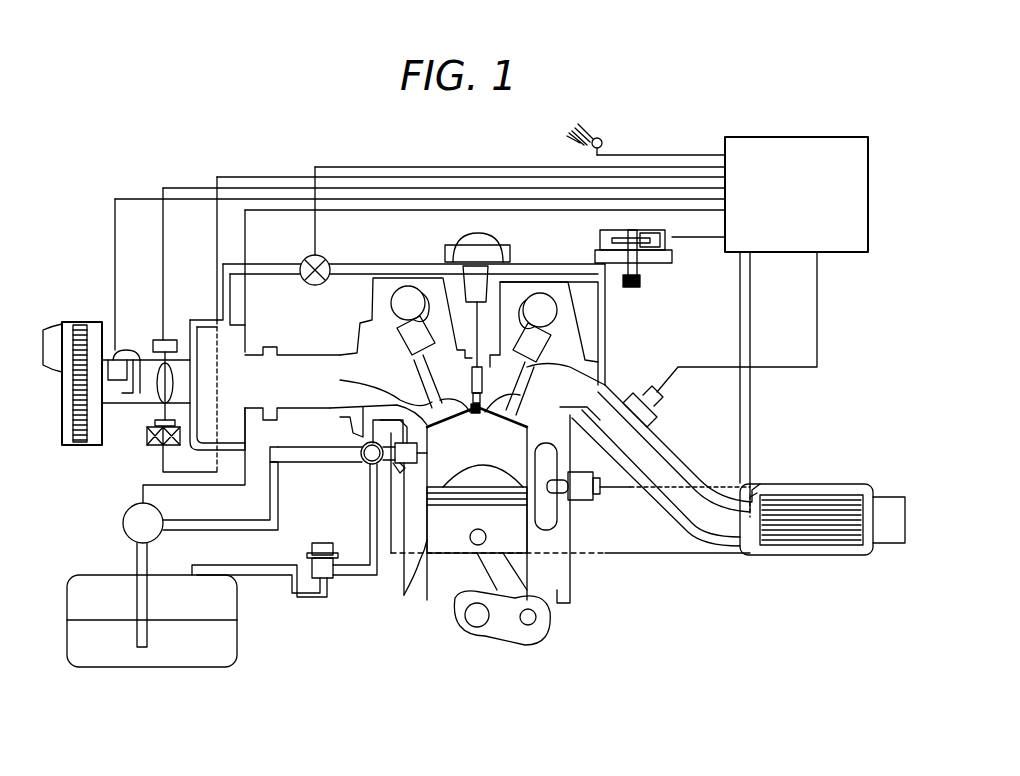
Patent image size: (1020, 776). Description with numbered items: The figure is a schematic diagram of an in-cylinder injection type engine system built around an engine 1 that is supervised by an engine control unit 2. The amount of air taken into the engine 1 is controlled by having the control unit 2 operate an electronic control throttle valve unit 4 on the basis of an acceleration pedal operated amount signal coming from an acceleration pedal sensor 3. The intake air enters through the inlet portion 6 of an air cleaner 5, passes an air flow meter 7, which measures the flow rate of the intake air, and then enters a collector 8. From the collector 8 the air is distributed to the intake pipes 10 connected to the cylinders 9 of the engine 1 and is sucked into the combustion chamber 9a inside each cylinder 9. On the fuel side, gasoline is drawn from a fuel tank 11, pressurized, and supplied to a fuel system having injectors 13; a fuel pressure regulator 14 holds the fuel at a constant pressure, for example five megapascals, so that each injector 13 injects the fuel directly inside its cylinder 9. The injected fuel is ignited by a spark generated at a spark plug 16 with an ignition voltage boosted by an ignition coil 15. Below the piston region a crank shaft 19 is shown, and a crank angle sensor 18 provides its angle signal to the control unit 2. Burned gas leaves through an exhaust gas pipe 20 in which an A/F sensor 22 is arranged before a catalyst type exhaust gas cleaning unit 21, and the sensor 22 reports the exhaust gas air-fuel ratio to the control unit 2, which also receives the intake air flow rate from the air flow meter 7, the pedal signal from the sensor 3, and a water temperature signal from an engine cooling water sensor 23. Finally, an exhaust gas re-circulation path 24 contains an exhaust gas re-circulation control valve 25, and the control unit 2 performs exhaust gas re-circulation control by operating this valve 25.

The engine 1 is at (427, 588).
The engine control unit 2 is at (790, 253).
The acceleration pedal operated amount sensor 3 is at (601, 140).
The electronic control throttle valve unit 4 is at (148, 445).
The air cleaner 5 is at (82, 330).
The inlet portion 6 is at (50, 330).
The air flow meter 7 is at (132, 349).
The collector 8 is at (232, 432).
The cylinder 9 is at (413, 545).
The combustion chamber 9a is at (555, 413).
The intake pipe 10 is at (403, 383).
The fuel tank 11 is at (86, 576).
The injector 13 is at (375, 466).
The fuel pressure regulator 14 is at (315, 542).
The ignition coil 15 is at (450, 254).
The spark plug 16 is at (543, 360).
The crank angle sensor 18 is at (668, 247).
The crank shaft 19 is at (497, 640).
The exhaust gas pipe 20 is at (668, 487).
The catalyst type exhaust gas cleaning unit 21 is at (792, 540).
The A/F sensor 22 is at (660, 412).
The engine cooling water sensor 23 is at (582, 500).
The exhaust gas re-circulation path 24 is at (350, 262).
The exhaust gas re-circulation control valve 25 is at (305, 264).